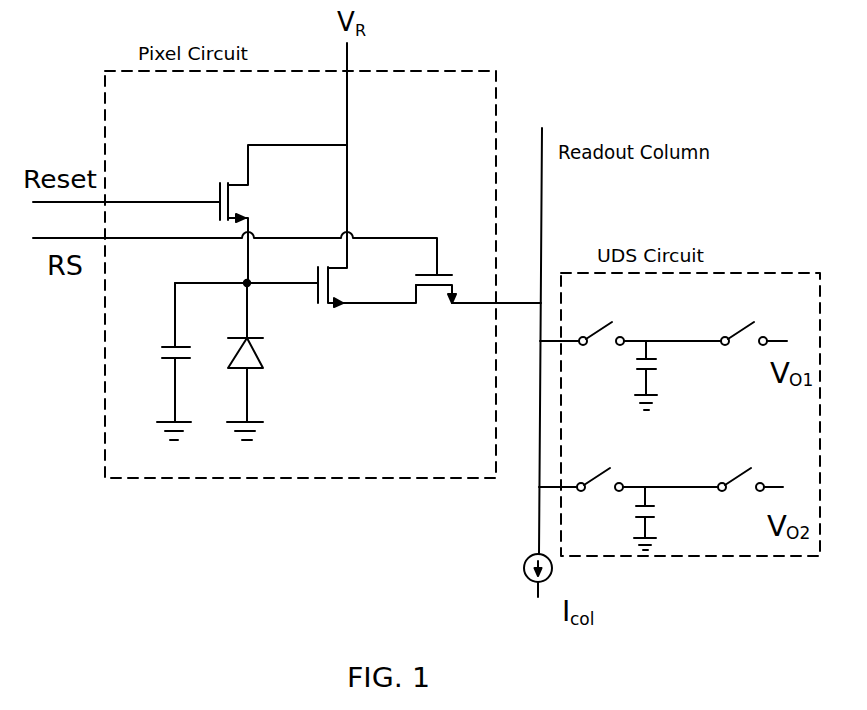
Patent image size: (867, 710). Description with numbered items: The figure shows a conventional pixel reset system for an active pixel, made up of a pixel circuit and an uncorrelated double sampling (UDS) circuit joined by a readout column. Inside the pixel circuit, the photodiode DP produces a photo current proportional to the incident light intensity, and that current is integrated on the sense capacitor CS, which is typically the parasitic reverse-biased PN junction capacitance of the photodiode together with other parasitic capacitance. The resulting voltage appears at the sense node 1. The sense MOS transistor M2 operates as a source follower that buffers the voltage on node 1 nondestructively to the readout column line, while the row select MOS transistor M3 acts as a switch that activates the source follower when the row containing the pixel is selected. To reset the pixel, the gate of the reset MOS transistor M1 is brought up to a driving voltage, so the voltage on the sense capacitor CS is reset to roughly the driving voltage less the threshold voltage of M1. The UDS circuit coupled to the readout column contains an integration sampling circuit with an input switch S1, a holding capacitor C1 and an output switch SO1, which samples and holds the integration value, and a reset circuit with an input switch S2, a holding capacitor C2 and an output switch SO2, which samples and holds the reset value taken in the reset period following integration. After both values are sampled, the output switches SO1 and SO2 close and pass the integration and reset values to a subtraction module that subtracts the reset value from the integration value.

The sense node 1 is at (237, 275).
The reset MOS transistor M1 is at (265, 210).
The sense MOS transistor M2 is at (367, 313).
The row select MOS transistor M3 is at (478, 308).
The sense capacitor CS is at (154, 361).
The photodiode DP is at (263, 361).
The input switch S1 is at (593, 317).
The input switch S2 is at (592, 464).
The output switch SO1 is at (716, 318).
The output switch SO2 is at (714, 463).
The holding capacitor C1 is at (672, 375).
The holding capacitor C2 is at (670, 518).